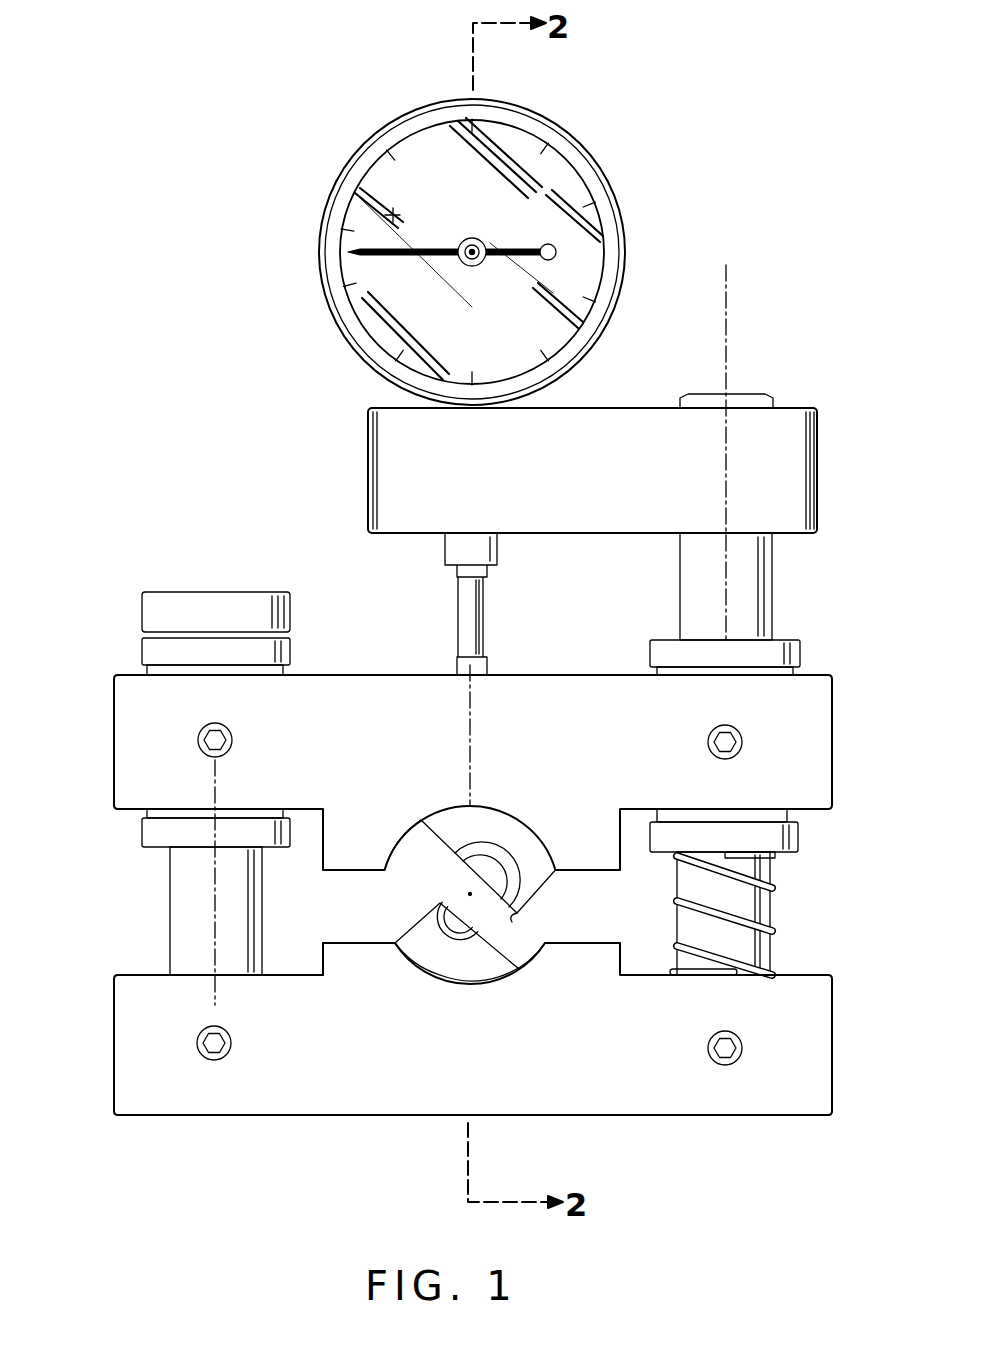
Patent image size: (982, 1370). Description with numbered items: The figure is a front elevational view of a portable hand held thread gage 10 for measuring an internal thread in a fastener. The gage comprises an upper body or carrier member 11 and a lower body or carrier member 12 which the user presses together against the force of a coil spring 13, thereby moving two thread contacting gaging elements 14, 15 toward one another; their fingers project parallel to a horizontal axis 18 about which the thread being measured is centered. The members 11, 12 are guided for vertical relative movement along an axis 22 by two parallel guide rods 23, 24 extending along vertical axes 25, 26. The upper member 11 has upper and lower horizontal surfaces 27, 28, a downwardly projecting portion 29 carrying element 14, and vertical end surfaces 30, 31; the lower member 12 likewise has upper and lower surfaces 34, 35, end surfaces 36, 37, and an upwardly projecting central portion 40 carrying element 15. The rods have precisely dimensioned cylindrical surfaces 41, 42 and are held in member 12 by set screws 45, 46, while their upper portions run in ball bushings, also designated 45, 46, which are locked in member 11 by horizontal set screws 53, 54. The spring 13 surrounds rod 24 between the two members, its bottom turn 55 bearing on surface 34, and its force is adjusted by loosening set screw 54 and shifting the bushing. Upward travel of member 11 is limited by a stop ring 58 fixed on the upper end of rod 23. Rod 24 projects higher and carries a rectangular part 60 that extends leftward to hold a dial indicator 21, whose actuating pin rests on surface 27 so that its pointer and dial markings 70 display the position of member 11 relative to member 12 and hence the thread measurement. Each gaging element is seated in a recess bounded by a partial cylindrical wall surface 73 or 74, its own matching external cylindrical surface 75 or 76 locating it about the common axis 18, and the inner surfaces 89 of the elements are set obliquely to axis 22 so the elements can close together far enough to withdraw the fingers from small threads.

The thread gage 10 is at (248, 379).
The upper body or carrier member 11 is at (833, 786).
The lower body or carrier member 12 is at (832, 1045).
The spring 13 is at (772, 930).
The gaging element 14 is at (475, 836).
The gaging element 15 is at (413, 935).
The axis 18 is at (462, 892).
The dial indicator 21 is at (523, 235).
The axis 22 is at (476, 738).
The rod 23 is at (182, 915).
The rod 24 is at (745, 905).
The axis 25 is at (218, 793).
The axis 26 is at (727, 316).
The upper horizontal surface 27 is at (344, 674).
The lower horizontal surface 28 is at (128, 811).
The downwardly projecting portion 29 is at (618, 866).
The end surface 30 is at (113, 725).
The end surface 31 is at (832, 723).
The upper horizontal surface 34 is at (302, 958).
The lower horizontal surface 35 is at (362, 1116).
The end surface 36 is at (113, 1032).
The end surface 37 is at (832, 1078).
The upwardly projecting central portion 40 is at (345, 945).
The outer cylindrical surface 41 is at (170, 865).
The outer cylindrical surface 42 is at (775, 870).
The set screw / tubular bushing 45 is at (140, 652).
The set screw / tubular bushing 46 is at (790, 660).
The set screw 53 is at (226, 735).
The set screw 54 is at (709, 738).
The bottom turn 55 is at (702, 975).
The stop ring 58 is at (237, 605).
The part 60 is at (395, 448).
The markings 70 is at (418, 150).
The partial cylindrical wall surface 73 is at (495, 808).
The partial cylindrical wall surface 74 is at (428, 950).
The external partial cylindrical surface 75 is at (440, 815).
The external partial cylindrical surface 76 is at (472, 985).
The inner surfaces 89 is at (515, 908).